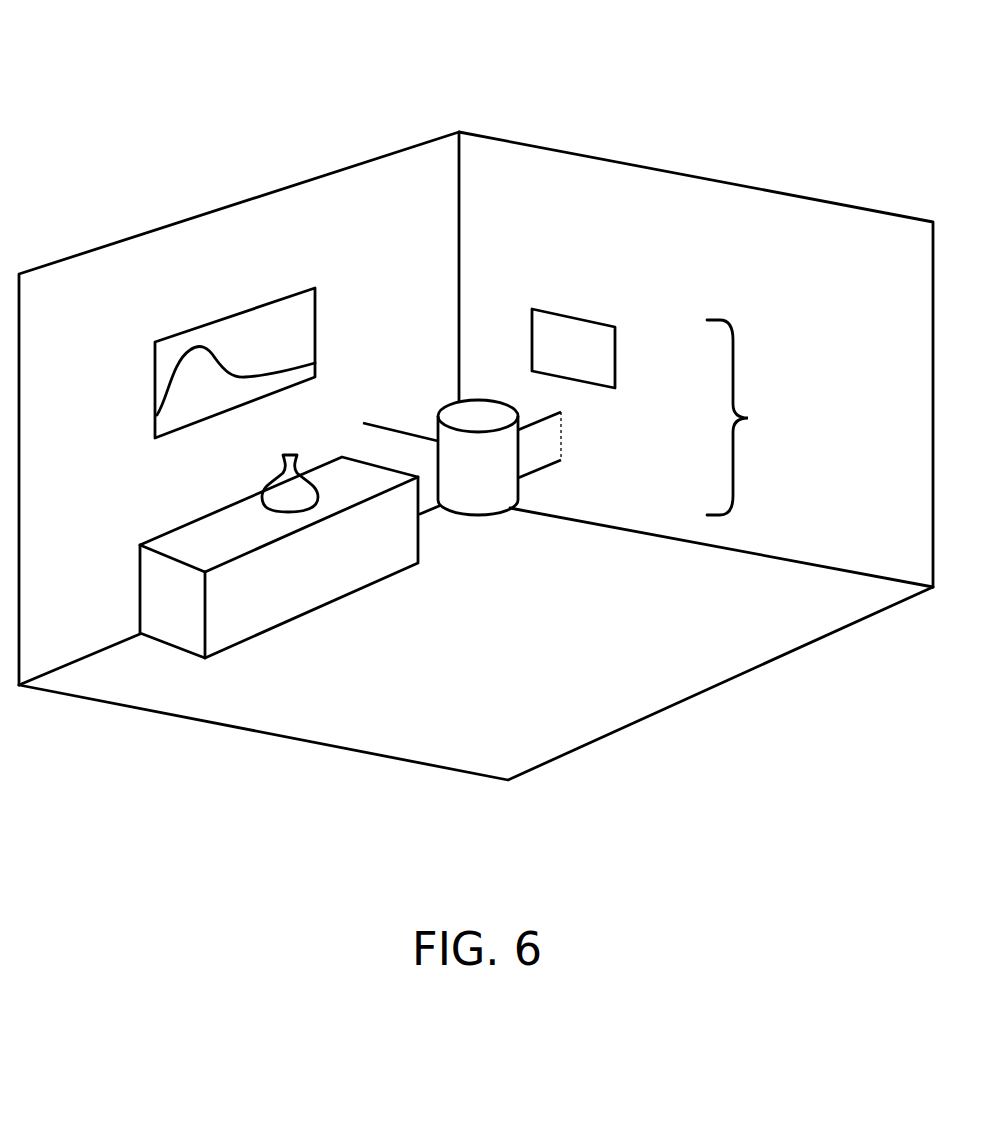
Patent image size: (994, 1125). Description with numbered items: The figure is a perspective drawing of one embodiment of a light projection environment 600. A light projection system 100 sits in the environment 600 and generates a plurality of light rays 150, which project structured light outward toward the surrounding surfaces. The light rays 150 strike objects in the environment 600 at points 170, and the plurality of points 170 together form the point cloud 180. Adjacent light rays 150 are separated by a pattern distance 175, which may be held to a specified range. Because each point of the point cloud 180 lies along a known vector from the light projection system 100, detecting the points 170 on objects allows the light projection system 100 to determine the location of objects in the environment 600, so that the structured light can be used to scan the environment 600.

The light projection environment 600 is at (203, 62).
The light projection system 100 is at (497, 476).
The light rays 150 is at (418, 433).
The points 170 is at (363, 432).
The pattern distance 175 is at (563, 436).
The point cloud 180 is at (756, 417).